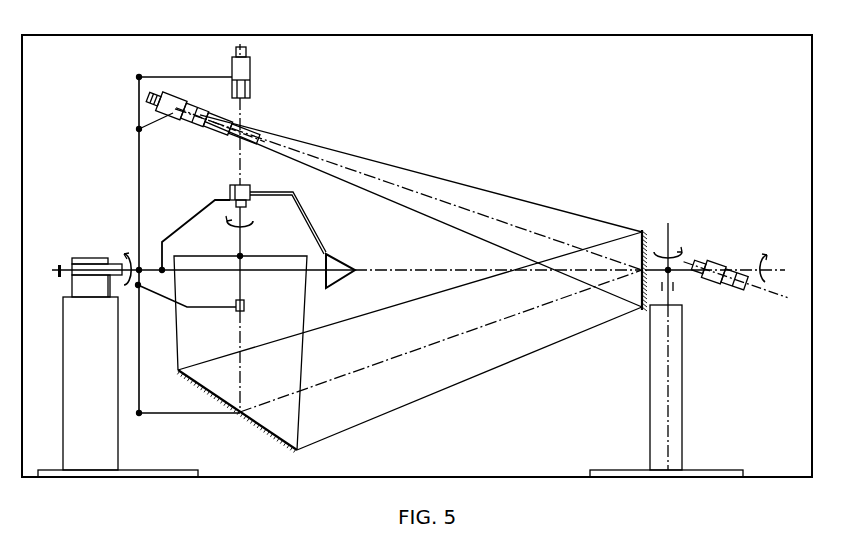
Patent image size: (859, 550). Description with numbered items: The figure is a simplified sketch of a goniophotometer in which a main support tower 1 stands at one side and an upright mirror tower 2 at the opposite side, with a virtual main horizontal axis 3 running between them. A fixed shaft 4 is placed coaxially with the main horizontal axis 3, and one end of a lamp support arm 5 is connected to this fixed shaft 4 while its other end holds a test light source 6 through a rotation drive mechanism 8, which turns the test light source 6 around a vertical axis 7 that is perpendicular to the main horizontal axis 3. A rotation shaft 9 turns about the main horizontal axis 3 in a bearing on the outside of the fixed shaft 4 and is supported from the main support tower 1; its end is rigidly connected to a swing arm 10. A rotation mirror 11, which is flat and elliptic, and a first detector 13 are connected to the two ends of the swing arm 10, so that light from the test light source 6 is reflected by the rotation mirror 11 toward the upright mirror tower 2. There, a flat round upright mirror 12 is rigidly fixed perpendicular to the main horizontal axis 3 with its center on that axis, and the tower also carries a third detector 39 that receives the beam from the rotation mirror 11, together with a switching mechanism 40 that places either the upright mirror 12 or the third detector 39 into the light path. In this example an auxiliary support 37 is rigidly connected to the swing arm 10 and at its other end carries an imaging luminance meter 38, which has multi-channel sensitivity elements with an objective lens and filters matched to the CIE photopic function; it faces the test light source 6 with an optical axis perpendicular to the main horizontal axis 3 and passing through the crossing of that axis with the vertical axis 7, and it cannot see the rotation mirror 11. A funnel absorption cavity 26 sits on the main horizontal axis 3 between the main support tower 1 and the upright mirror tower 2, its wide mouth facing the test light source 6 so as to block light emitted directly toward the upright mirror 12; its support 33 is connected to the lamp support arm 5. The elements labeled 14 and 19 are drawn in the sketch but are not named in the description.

The main support tower 1 is at (73, 448).
The upright mirror tower 2 is at (668, 448).
The main horizontal axis 3 is at (60, 272).
The fixed shaft 4 is at (70, 263).
The lamp support arm 5 is at (188, 220).
The test light source 6 is at (248, 265).
The vertical axis 7 is at (238, 362).
The rotation drive mechanism 8 is at (248, 190).
The rotation shaft 9 is at (121, 260).
The swing arm 10 is at (139, 207).
The rotation mirror 11 is at (272, 436).
The upright mirror 12 is at (645, 233).
The first detector 13 is at (156, 93).
The fixed support 14 is at (247, 50).
The collimator 19 is at (175, 112).
The funnel absorption cavity 26 is at (390, 246).
The support 33 is at (356, 214).
The auxiliary support 37 is at (173, 301).
The imaging luminance meter 38 is at (245, 306).
The third detector 39 is at (705, 265).
The switching mechanism 40 is at (680, 292).